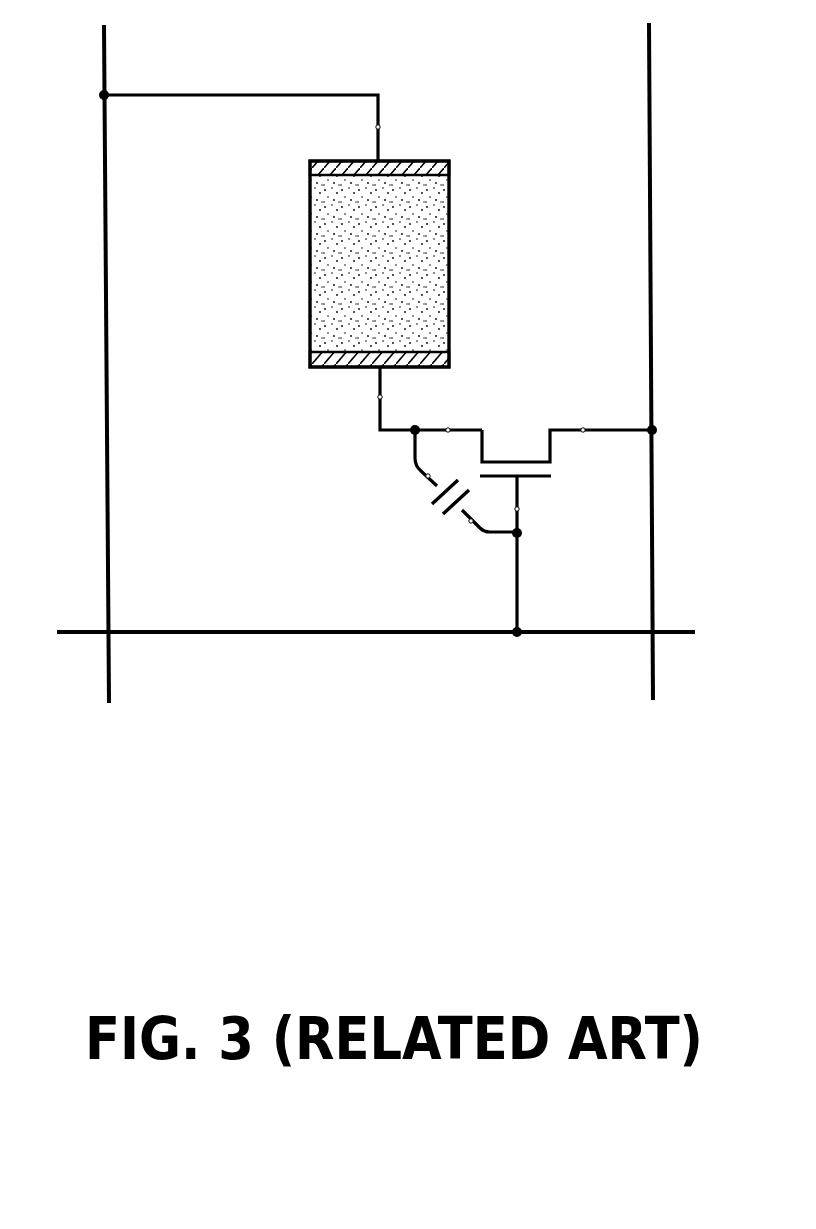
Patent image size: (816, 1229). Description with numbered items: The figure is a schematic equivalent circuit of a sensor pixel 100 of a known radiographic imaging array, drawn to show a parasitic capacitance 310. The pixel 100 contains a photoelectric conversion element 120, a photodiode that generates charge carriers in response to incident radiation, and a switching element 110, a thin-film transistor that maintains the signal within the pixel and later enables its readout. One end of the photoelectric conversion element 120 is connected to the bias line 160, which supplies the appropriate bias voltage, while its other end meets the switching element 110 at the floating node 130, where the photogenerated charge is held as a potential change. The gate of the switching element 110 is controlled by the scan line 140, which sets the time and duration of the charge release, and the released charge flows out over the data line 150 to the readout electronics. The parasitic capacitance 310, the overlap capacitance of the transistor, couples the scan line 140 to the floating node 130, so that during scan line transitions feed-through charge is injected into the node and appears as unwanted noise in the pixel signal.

The sensor pixel 100 is at (385, 812).
The switching element 110 is at (568, 516).
The photoelectric conversion element 120 is at (400, 264).
The floating node 130 is at (383, 427).
The scan line 140 is at (376, 595).
The data line 150 is at (605, 361).
The bias line 160 is at (154, 364).
The parasitic capacitance 310 is at (461, 481).